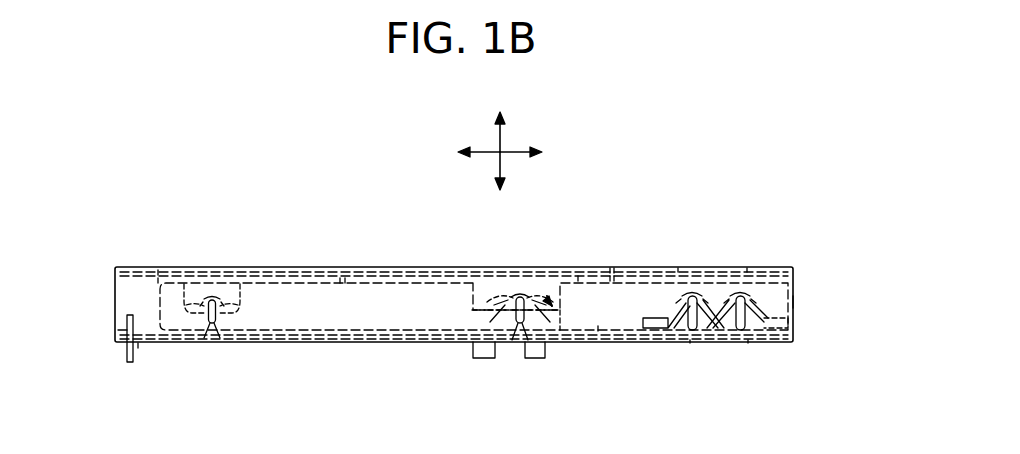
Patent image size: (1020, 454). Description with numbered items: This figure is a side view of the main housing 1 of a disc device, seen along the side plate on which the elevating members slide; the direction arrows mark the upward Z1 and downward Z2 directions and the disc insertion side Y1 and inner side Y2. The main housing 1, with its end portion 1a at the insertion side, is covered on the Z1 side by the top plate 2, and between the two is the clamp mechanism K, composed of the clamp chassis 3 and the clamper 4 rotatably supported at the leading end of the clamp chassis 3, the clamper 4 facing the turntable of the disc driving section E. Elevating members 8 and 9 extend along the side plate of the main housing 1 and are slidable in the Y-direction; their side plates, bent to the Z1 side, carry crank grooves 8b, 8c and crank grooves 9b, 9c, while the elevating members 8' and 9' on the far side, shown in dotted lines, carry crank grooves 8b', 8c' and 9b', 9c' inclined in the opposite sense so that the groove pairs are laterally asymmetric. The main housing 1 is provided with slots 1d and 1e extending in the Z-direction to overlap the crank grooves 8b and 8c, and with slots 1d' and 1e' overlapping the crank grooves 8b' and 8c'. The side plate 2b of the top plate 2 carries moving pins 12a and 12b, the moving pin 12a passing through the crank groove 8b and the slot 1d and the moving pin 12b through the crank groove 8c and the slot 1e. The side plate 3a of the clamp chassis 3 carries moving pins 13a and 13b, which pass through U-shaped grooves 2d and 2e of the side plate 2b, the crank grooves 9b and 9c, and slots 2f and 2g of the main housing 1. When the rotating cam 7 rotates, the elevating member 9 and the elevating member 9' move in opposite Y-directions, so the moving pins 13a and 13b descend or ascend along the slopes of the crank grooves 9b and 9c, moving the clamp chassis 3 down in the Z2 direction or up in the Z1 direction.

The main housing 1 is at (122, 343).
The frame end portion 1a is at (139, 344).
The slot 1d is at (247, 348).
The slot 1d' is at (267, 350).
The slot 1e is at (529, 372).
The slot 1e' is at (550, 372).
The top plate 2 is at (128, 268).
The side plate 2b is at (158, 268).
The U-shaped groove 2d is at (678, 268).
The U-shaped groove 2e is at (747, 268).
The slot 2f is at (690, 340).
The slot 2g is at (748, 340).
The clamp chassis 3 is at (578, 276).
The side plate 3a is at (794, 302).
The clamper 4 is at (470, 280).
The rotating cam 7 is at (598, 332).
The elevating member 8 is at (333, 248).
The elevating member 8' is at (350, 247).
The crank groove 8b is at (189, 270).
The crank groove 8b' is at (236, 270).
The crank groove 8c is at (465, 360).
The crank groove 8c' is at (550, 364).
The elevating member 9 is at (606, 234).
The elevating member 9' is at (624, 234).
The crank groove 9b is at (704, 273).
The crank groove 9b' is at (663, 273).
The crank groove 9c is at (769, 282).
The crank groove 9c' is at (726, 281).
The moving pin 12a is at (211, 325).
The moving pin 12b is at (517, 325).
The moving pin 13a is at (690, 333).
The moving pin 13b is at (742, 333).
The disc driving section E is at (470, 312).
The clamp mechanism K is at (547, 296).
The Z1-direction Z1 is at (500, 120).
The Z2-direction Z2 is at (500, 184).
The Y1-direction Y1 is at (464, 152).
The Y2-direction Y2 is at (536, 152).